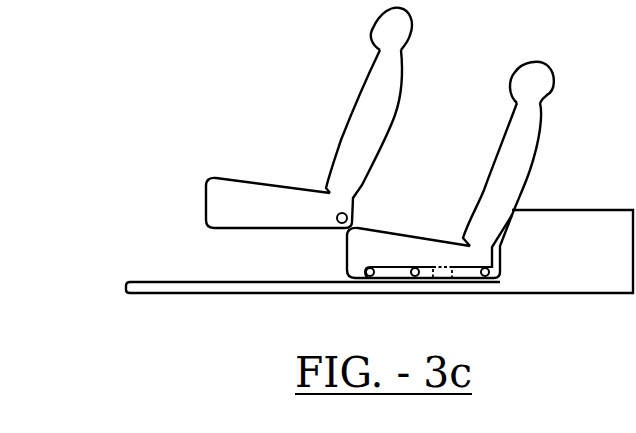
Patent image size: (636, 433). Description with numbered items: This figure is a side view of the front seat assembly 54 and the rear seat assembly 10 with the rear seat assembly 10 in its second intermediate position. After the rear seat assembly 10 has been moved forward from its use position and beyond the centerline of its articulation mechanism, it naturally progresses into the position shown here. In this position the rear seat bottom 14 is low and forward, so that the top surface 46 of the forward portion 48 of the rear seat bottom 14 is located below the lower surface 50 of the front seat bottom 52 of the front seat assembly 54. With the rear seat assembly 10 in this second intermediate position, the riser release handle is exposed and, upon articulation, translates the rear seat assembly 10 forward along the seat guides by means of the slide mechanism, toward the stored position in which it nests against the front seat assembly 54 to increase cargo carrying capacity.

The rear seat assembly 10 is at (513, 158).
The rear seat bottom 14 is at (453, 252).
The top surface 46 is at (365, 225).
The forward portion 48 is at (367, 248).
The lower surface 50 is at (270, 230).
The front seat bottom 52 is at (243, 193).
The front seat assembly 54 is at (368, 107).